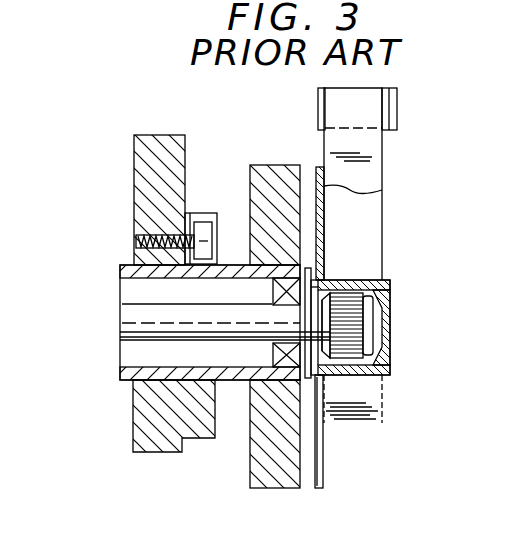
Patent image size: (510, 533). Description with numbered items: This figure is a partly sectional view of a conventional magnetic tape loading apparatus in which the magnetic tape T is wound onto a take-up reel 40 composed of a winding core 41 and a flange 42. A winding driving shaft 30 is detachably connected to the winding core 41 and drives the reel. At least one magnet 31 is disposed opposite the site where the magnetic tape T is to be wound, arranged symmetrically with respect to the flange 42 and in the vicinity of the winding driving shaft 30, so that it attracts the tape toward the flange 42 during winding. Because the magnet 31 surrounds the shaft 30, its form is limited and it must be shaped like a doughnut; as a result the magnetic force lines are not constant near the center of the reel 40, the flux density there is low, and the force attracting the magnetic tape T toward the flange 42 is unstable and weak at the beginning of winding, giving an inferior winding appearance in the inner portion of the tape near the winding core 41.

The winding driving shaft 30 is at (120, 318).
The magnet 31 is at (276, 165).
The take-up reel 40 is at (449, 361).
The winding core 41 is at (392, 307).
The flange 42 is at (323, 458).
The magnetic tape T is at (377, 178).